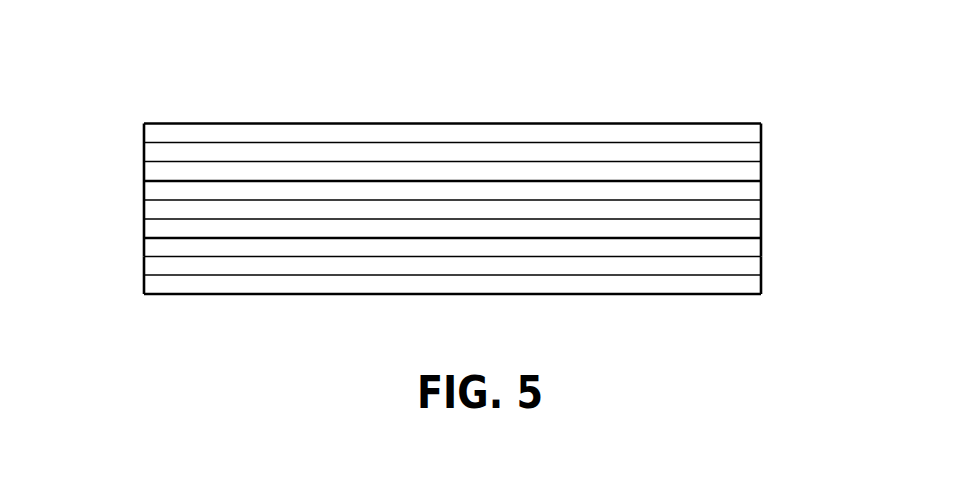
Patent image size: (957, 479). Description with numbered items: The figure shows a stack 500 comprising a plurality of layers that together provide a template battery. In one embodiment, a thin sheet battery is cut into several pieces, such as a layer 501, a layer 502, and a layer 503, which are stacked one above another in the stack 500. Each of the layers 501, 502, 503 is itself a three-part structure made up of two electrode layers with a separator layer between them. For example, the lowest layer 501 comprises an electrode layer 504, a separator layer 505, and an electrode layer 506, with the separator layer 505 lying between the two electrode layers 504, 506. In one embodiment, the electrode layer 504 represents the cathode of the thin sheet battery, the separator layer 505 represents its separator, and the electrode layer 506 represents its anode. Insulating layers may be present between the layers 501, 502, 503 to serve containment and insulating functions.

The stack 500 is at (717, 74).
The layer 501 is at (443, 270).
The layer 502 is at (138, 209).
The layer 503 is at (138, 151).
The electrode layer 504 is at (760, 288).
The separator layer 505 is at (753, 264).
The electrode layer 506 is at (755, 247).